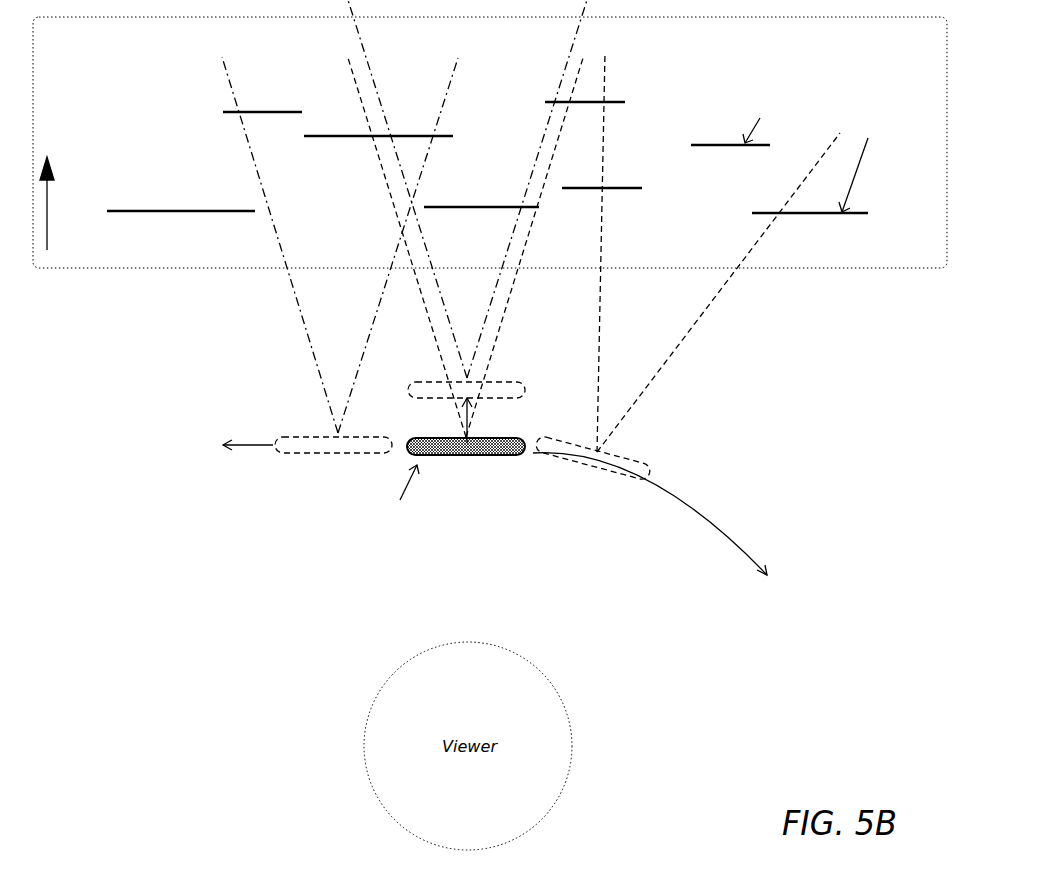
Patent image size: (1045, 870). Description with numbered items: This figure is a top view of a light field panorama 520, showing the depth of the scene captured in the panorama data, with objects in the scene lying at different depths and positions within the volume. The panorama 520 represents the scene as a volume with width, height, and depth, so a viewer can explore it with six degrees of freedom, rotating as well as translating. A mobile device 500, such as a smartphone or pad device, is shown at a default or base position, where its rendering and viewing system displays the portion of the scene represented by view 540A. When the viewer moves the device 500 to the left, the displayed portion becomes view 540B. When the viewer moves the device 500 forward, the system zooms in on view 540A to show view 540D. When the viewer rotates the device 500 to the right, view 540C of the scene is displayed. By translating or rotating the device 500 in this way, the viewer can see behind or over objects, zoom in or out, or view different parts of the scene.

The mobile device 500 is at (493, 467).
The light field panorama 520 is at (147, 120).
The view 540A is at (512, 293).
The view 540B is at (317, 365).
The view 540C is at (682, 345).
The view 540D is at (506, 256).